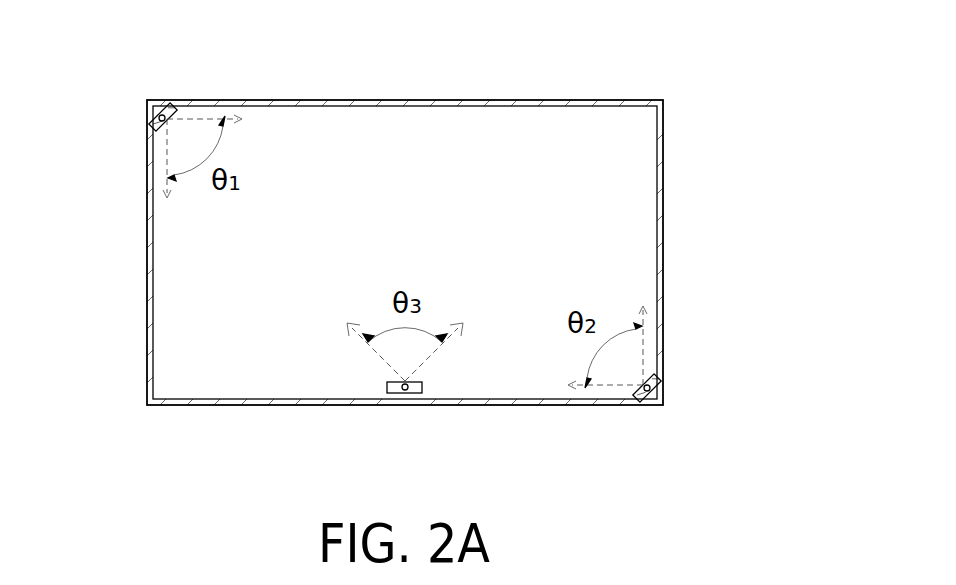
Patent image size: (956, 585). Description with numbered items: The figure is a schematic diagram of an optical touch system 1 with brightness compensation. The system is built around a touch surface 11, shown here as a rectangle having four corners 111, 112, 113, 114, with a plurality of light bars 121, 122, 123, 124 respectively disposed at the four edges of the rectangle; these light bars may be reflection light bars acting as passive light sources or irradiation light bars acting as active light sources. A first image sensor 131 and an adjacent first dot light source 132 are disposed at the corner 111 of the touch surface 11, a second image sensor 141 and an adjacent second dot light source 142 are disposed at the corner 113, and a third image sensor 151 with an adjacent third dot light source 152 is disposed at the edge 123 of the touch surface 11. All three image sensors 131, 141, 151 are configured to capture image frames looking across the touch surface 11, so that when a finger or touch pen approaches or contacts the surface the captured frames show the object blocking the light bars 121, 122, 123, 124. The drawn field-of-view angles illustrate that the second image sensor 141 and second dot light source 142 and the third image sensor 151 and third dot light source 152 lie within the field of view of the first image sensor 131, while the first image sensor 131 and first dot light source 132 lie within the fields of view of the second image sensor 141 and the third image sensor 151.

The optical touch system 1 is at (710, 38).
The touch surface 11 is at (473, 138).
The corner 111 is at (147, 100).
The corner 112 is at (663, 100).
The corner 113 is at (663, 405).
The corner 114 is at (146, 405).
The light bar 121 is at (600, 103).
The light bar 122 is at (660, 262).
The light bar 123 is at (251, 405).
The light bar 124 is at (148, 270).
The first image sensor 131 is at (172, 108).
The first dot light source 132 is at (157, 121).
The second image sensor 141 is at (637, 405).
The second dot light source 142 is at (660, 380).
The third image sensor 151 is at (392, 393).
The third dot light source 152 is at (407, 390).